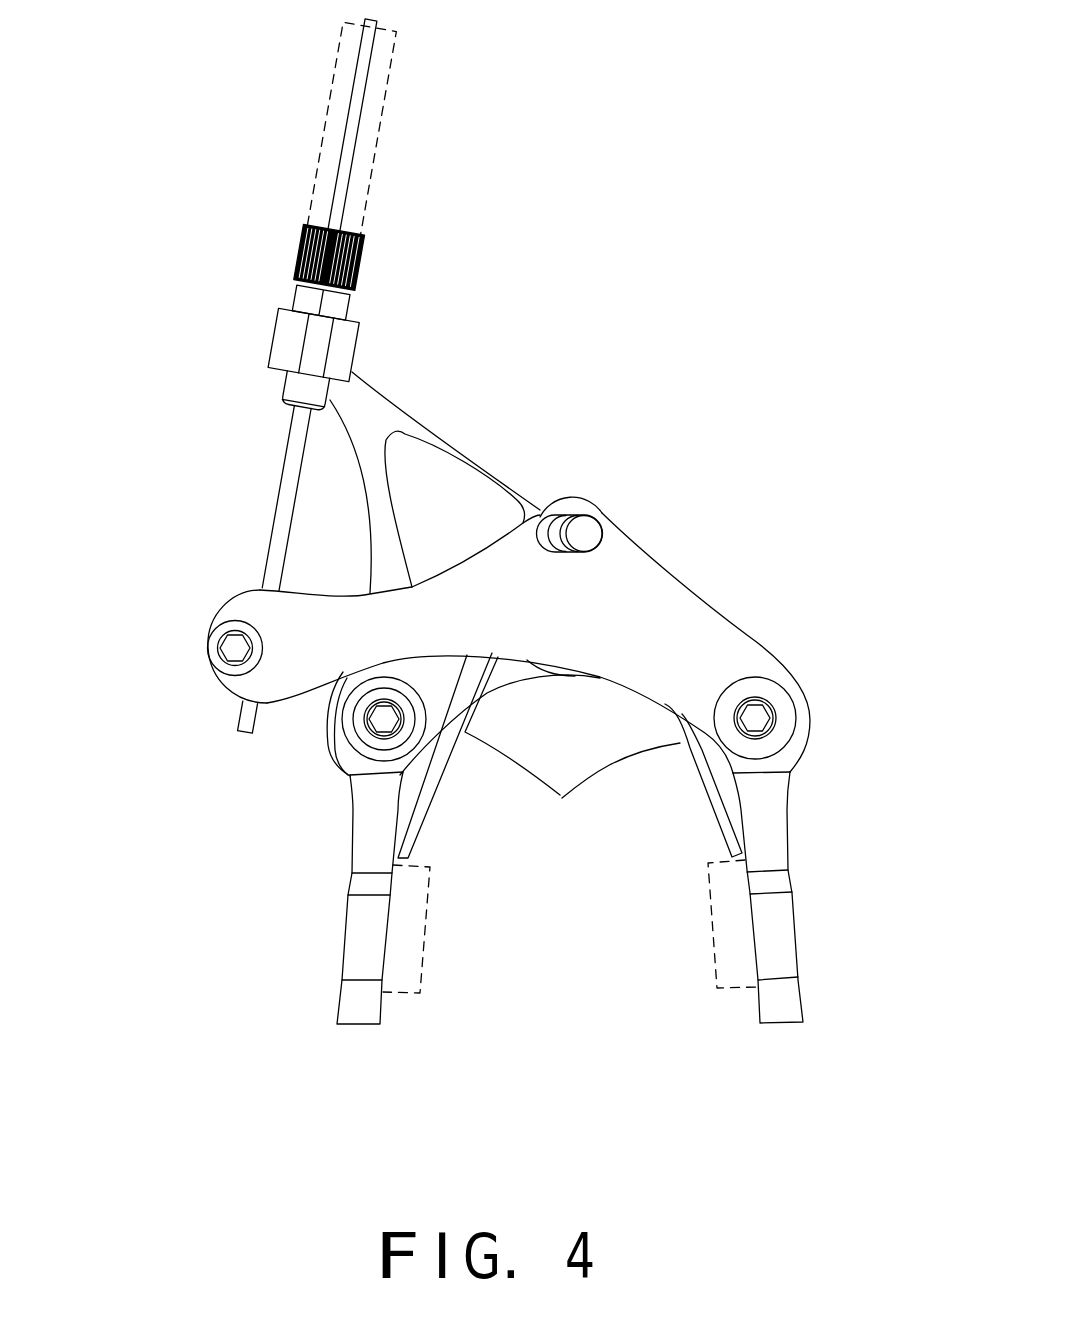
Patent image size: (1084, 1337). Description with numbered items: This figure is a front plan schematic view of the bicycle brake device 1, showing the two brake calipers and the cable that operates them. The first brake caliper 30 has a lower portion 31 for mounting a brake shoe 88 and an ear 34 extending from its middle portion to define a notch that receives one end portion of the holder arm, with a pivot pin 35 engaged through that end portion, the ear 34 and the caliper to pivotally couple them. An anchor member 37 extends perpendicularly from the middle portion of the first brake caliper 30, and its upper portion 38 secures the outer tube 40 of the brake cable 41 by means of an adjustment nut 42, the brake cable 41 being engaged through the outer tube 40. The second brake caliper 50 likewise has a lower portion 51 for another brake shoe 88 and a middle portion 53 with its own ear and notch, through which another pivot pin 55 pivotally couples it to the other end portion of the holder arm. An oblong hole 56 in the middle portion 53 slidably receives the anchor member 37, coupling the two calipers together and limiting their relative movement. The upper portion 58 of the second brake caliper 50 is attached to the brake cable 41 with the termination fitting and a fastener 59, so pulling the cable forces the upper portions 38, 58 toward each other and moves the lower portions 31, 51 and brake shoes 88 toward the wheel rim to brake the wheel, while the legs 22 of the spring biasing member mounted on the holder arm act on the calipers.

The bicycle brake device 1 is at (774, 305).
The legs 22 is at (570, 755).
The first brake caliper 30 is at (427, 437).
The lower portion 31 is at (350, 1010).
The ear 34 is at (343, 712).
The pivot pin 35 is at (375, 738).
The anchor member 37 is at (587, 532).
The upper portion 38 is at (287, 340).
The outer tube 40 is at (380, 113).
The brake cable 41 is at (348, 138).
The adjustment nut 42 is at (303, 247).
The second brake caliper 50 is at (731, 614).
The lower portion 51 is at (788, 998).
The middle portion 53 is at (823, 682).
The pivot pin 55 is at (756, 719).
The oblong hole 56 is at (548, 532).
The upper portion 58 is at (245, 603).
The fastener 59 is at (213, 656).
The brake shoe 88 is at (720, 933).